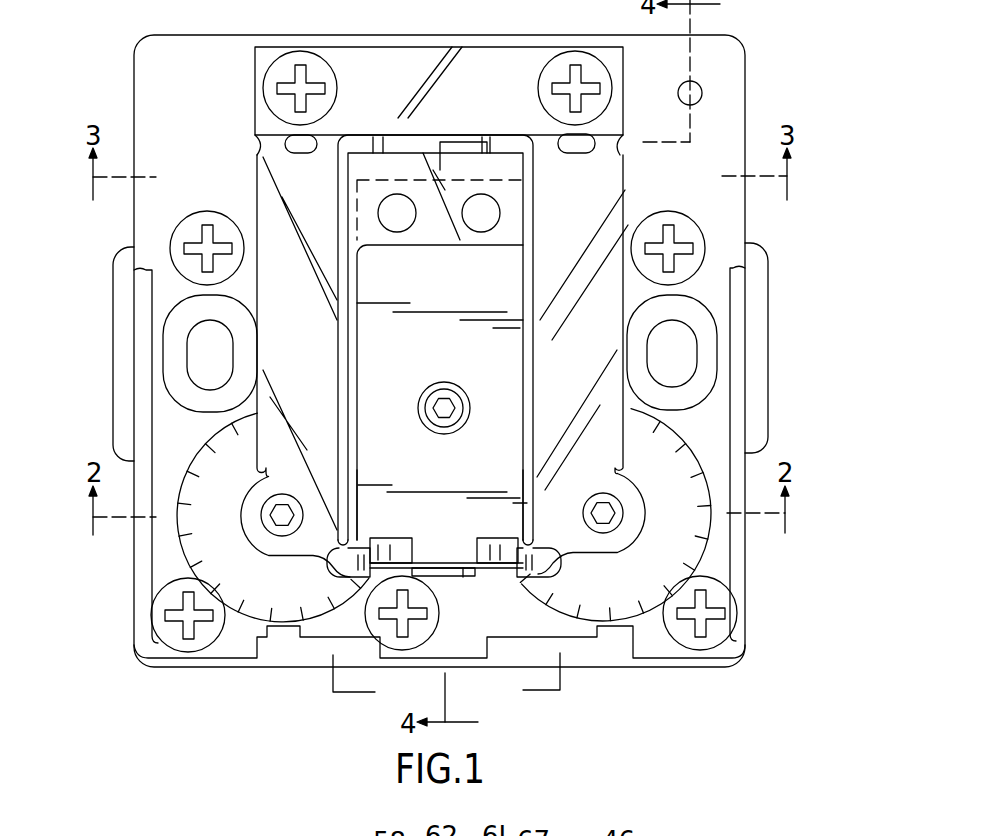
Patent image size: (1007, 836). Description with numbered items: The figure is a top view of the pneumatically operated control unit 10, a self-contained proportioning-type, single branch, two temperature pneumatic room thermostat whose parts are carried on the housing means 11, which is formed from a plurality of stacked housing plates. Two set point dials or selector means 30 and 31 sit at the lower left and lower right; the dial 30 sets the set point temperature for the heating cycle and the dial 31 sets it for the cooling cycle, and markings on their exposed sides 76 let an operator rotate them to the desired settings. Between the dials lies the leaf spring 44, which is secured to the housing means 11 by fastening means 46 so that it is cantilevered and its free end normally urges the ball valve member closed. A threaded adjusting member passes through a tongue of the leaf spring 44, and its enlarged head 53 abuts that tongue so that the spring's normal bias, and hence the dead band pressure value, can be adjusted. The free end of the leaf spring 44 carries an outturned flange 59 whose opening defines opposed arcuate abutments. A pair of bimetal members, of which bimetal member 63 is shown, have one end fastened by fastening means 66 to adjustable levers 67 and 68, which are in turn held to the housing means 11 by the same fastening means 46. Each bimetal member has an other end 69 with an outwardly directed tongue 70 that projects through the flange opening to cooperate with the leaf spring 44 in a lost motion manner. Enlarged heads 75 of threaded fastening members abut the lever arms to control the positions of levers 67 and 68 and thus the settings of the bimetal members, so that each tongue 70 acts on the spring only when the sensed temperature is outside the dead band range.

The pneumatically operated control unit 10 is at (793, 24).
The housing means 11 is at (718, 413).
The set point dial 30 is at (200, 543).
The set point dial 31 is at (717, 547).
The leaf spring 44 is at (507, 543).
The fastening means 46 is at (317, 63).
The enlarged head 53 is at (455, 392).
The outturned flange 59 is at (493, 577).
The bimetal member 63 is at (510, 385).
The fastening means 66 is at (388, 208).
The adjustable lever 67 is at (277, 218).
The adjustable lever 68 is at (598, 208).
The other end 69 is at (390, 521).
The outwardly directed tongue 70 is at (463, 577).
The enlarged head 75 is at (266, 500).
The exposed side 76 is at (235, 428).